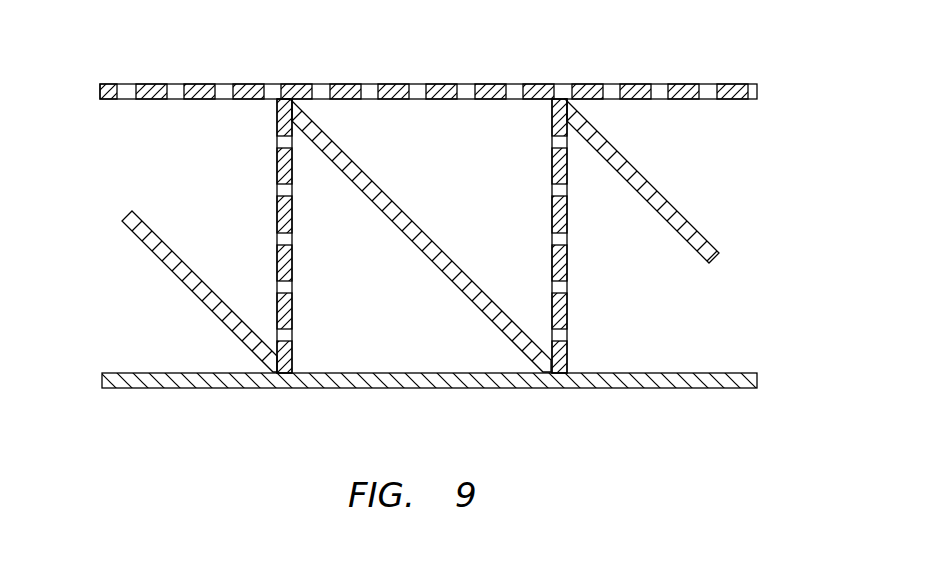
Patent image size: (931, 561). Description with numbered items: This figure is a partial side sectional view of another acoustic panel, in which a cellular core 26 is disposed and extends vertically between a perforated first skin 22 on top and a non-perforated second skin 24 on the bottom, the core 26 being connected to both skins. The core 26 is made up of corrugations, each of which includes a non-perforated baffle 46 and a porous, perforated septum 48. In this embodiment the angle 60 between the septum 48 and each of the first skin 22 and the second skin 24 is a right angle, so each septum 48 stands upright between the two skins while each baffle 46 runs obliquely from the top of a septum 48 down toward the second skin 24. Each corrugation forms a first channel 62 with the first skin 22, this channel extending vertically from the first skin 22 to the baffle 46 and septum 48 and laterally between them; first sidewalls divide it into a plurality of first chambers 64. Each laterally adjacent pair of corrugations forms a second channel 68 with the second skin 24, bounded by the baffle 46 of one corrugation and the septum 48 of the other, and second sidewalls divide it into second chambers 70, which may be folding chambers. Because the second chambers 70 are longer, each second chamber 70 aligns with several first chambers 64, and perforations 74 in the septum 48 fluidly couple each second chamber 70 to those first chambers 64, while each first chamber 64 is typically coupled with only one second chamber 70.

The first skin 22 is at (100, 92).
The second skin 24 is at (102, 383).
The cellular core 26 is at (85, 103).
The baffle 46 is at (158, 258).
The septum 48 is at (292, 254).
The angle 60 is at (549, 144).
The first channel 62 is at (763, 160).
The first chamber 64 is at (483, 166).
The second channel 68 is at (726, 359).
The second chamber 70 is at (440, 342).
The perforations 74 is at (277, 268).